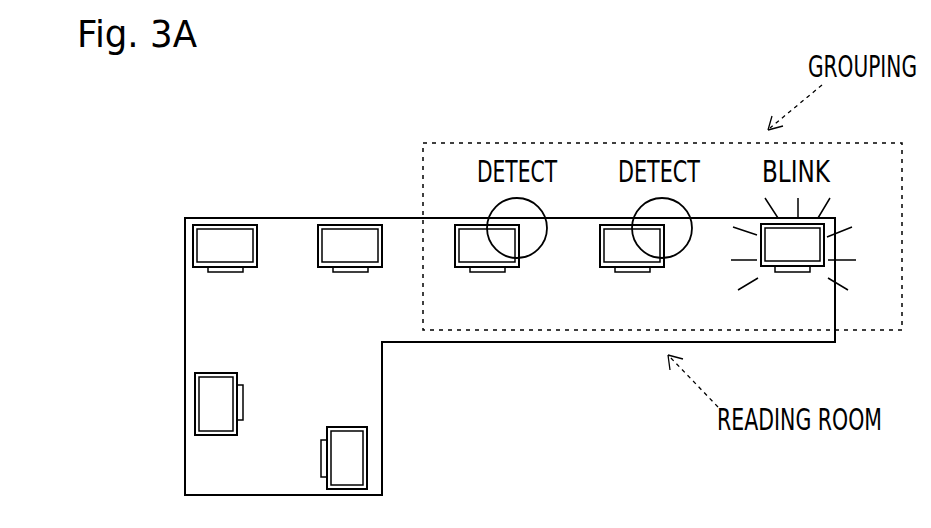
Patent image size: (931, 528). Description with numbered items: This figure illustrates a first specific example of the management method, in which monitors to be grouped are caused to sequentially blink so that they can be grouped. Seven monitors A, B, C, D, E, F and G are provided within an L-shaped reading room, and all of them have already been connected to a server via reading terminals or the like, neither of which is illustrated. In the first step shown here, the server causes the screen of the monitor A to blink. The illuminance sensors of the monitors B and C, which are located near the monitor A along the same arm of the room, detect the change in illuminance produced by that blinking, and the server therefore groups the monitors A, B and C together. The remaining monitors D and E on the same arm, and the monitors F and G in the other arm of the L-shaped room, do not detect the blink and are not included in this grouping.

The monitor A is at (793, 260).
The monitor B is at (646, 260).
The monitor C is at (501, 260).
The monitor D is at (350, 273).
The monitor E is at (225, 273).
The monitor F is at (219, 425).
The monitor G is at (344, 438).